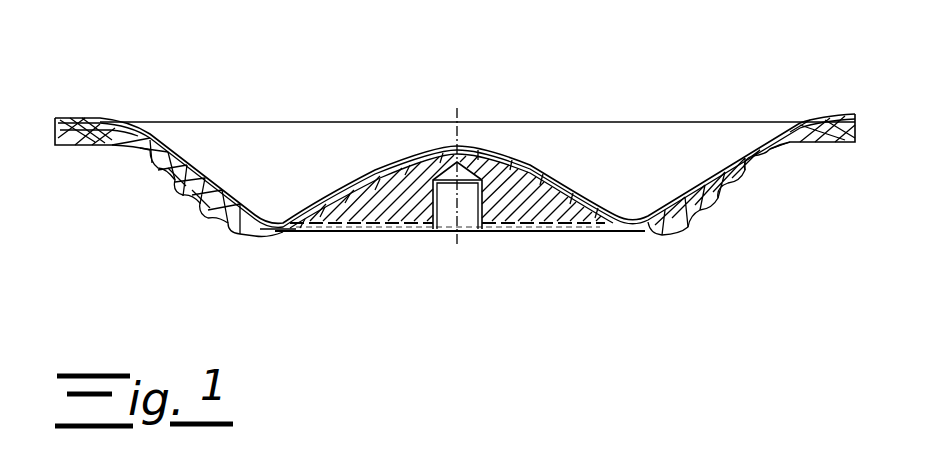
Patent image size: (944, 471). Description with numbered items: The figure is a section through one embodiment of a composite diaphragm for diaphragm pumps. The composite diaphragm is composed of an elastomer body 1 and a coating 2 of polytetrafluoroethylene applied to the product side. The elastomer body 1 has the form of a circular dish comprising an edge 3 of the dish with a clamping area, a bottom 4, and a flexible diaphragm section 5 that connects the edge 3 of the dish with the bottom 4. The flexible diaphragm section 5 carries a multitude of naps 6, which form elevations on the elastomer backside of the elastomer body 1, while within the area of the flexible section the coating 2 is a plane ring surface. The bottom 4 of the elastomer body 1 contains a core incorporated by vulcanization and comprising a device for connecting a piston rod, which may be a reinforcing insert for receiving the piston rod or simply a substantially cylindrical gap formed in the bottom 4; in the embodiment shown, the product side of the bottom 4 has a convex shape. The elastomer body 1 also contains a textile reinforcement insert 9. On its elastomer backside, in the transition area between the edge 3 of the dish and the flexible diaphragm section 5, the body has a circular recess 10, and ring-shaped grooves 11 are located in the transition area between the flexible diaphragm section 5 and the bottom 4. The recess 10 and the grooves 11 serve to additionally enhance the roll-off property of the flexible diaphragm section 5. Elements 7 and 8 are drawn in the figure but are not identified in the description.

The elastomer body 1 is at (713, 188).
The coating 2 is at (680, 195).
The edge of the dish 3 is at (78, 108).
The bottom 4 is at (532, 148).
The flexible diaphragm section 5 is at (721, 140).
The naps 6 is at (180, 182).
The base plate 7 is at (540, 215).
The central column 8 is at (468, 218).
The textile reinforcement insert 9 is at (198, 200).
The circular recess 10 is at (120, 143).
The ring-shaped grooves 11 is at (275, 232).